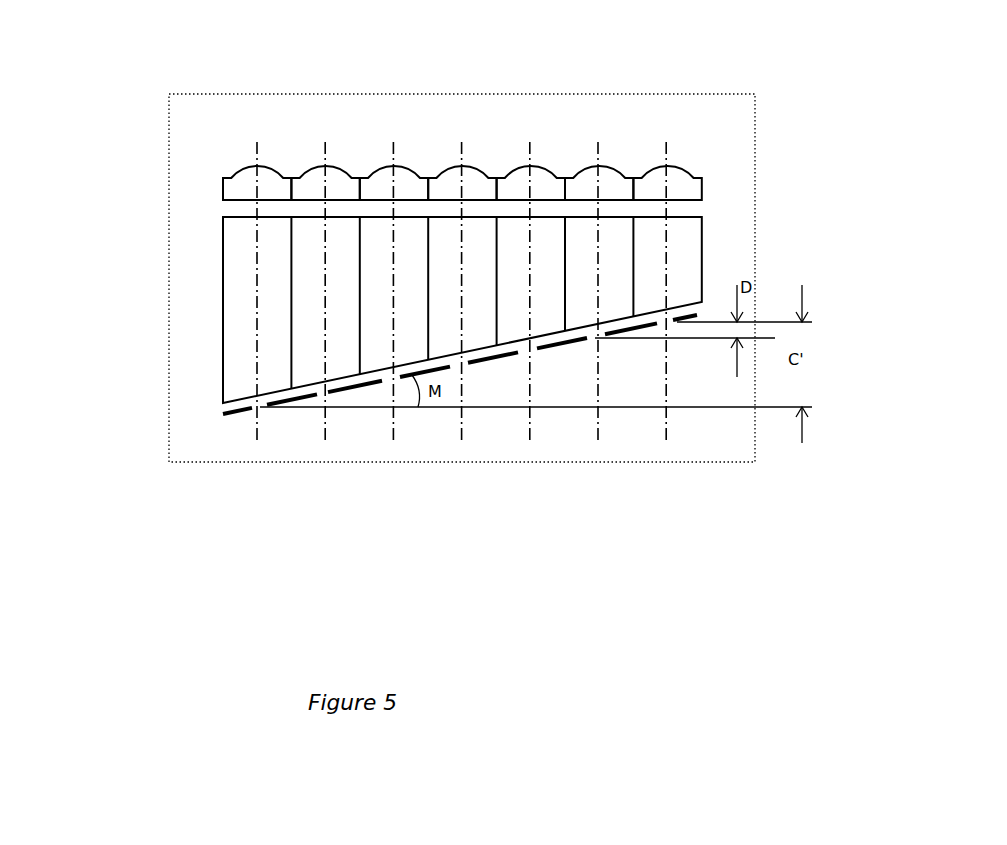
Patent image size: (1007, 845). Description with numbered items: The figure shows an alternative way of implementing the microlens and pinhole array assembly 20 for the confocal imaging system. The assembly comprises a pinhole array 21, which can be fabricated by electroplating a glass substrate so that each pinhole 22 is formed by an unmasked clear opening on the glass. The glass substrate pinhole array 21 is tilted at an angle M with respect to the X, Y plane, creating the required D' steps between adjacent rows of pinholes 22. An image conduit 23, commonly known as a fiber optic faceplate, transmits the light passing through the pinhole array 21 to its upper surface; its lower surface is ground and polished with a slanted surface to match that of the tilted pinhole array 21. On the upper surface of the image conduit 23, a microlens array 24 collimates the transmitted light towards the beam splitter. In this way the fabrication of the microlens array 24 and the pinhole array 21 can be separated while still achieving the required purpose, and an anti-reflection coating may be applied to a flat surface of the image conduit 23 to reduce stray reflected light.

The microlens and pinhole array assembly 20 is at (424, 237).
The pinhole array 21 is at (407, 450).
The pinhole 22 is at (441, 475).
The image conduit 23 is at (381, 310).
The microlens array 24 is at (374, 158).